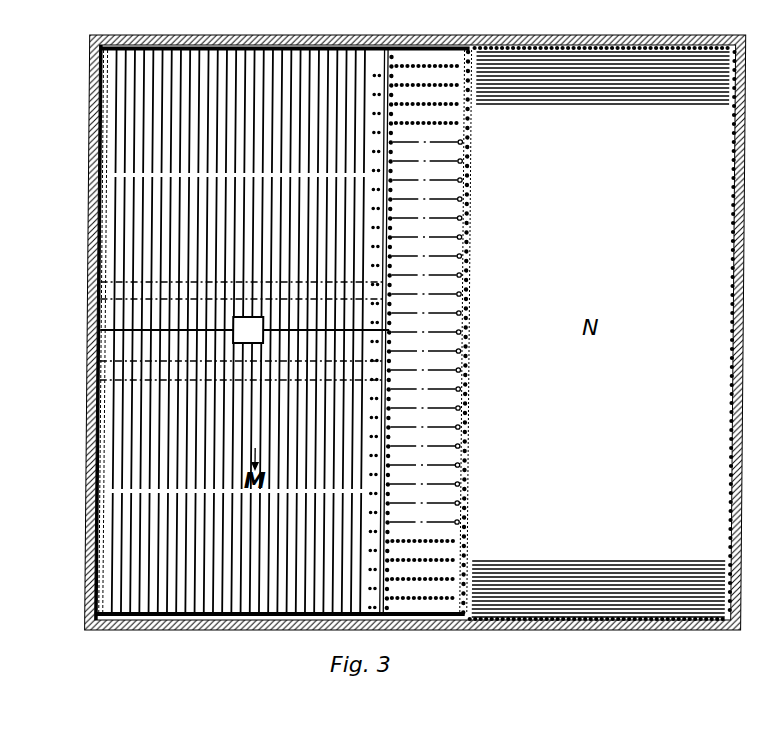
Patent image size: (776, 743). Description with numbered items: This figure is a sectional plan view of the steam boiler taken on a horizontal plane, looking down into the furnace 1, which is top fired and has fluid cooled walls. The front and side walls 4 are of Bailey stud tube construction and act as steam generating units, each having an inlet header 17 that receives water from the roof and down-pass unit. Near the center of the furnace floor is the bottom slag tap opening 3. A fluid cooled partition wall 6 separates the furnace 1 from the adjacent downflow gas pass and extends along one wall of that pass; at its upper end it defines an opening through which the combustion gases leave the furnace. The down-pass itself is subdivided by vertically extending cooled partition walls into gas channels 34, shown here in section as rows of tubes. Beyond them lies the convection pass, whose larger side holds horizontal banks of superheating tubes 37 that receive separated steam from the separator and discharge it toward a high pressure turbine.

The front and side walls 4 is at (249, 43).
The furnace 1 is at (243, 265).
The inlet header 17 is at (307, 281).
The bottom slag tap opening 3 is at (252, 341).
The fluid cooled partition wall 6 is at (388, 208).
The gas channels 34 is at (440, 87).
The superheating tubes 37 is at (609, 100).